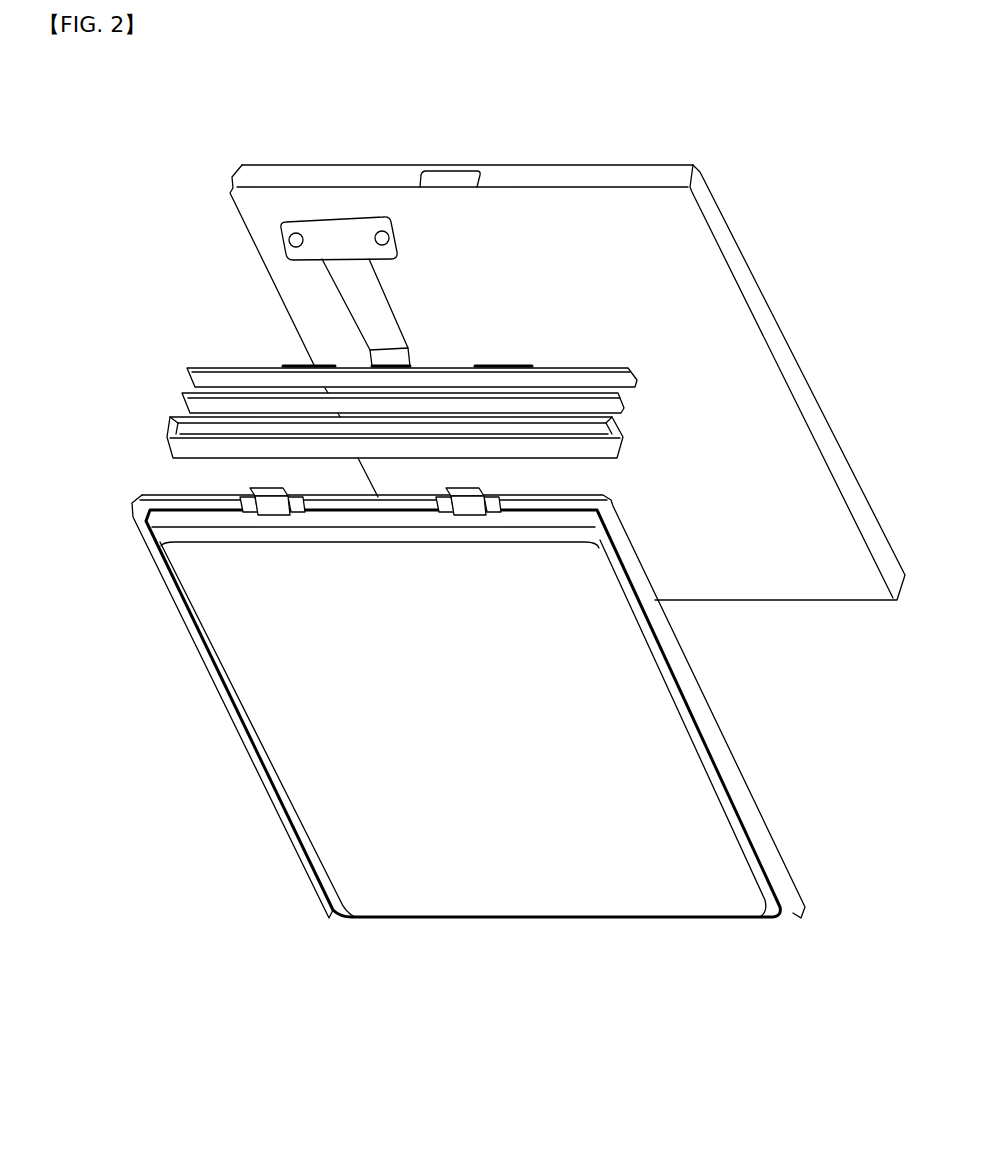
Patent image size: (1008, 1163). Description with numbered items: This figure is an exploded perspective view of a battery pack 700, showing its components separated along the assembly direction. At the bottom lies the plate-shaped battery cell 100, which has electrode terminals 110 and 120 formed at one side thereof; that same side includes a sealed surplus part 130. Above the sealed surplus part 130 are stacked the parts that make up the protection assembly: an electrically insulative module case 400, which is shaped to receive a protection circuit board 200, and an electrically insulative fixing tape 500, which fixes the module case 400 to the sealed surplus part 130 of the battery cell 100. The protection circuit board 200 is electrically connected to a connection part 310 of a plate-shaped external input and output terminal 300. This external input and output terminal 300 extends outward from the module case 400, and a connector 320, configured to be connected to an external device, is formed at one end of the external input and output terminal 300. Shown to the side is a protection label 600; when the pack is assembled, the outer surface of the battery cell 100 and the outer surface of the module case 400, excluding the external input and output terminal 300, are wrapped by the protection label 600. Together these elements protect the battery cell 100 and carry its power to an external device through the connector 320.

The battery pack 700 is at (466, 537).
The protection label 600 is at (750, 250).
The external input and output terminal 300 is at (243, 291).
The connection part 310 is at (370, 313).
The connector 320 is at (333, 247).
The protection circuit board 200 is at (166, 375).
The fixing tape 500 is at (165, 403).
The module case 400 is at (146, 440).
The battery cell 100 is at (468, 738).
The electrode terminal 110 is at (273, 505).
The electrode terminal 120 is at (460, 505).
The sealed surplus part 130 is at (375, 524).